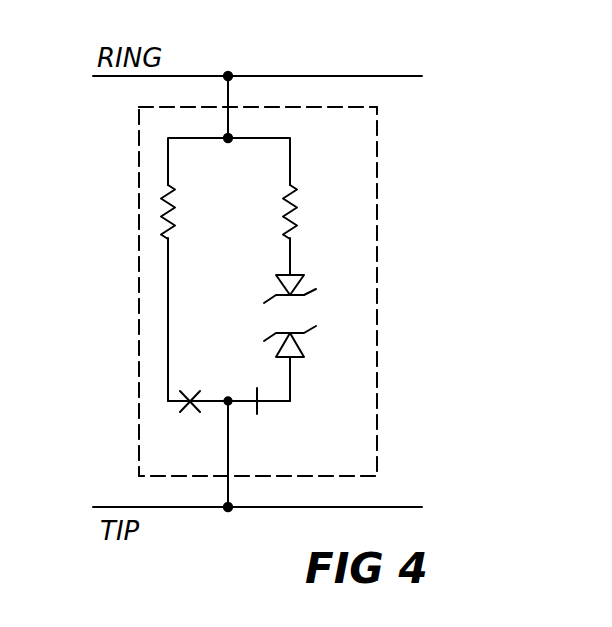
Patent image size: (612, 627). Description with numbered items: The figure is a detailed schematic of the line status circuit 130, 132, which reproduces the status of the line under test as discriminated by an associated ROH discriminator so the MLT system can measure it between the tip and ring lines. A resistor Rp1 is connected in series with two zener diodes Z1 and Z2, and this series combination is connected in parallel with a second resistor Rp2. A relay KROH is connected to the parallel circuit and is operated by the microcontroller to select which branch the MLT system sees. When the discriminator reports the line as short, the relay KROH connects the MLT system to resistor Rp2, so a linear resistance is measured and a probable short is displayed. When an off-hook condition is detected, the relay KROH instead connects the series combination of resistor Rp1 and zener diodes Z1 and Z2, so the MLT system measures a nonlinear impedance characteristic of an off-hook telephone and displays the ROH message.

The line status circuit 130 is at (378, 243).
The line status circuit 132 is at (378, 243).
The resistor Rp1 is at (318, 212).
The resistor Rp2 is at (197, 212).
The zener diode Z1 is at (314, 286).
The zener diode Z2 is at (314, 342).
The relay KROH is at (237, 426).